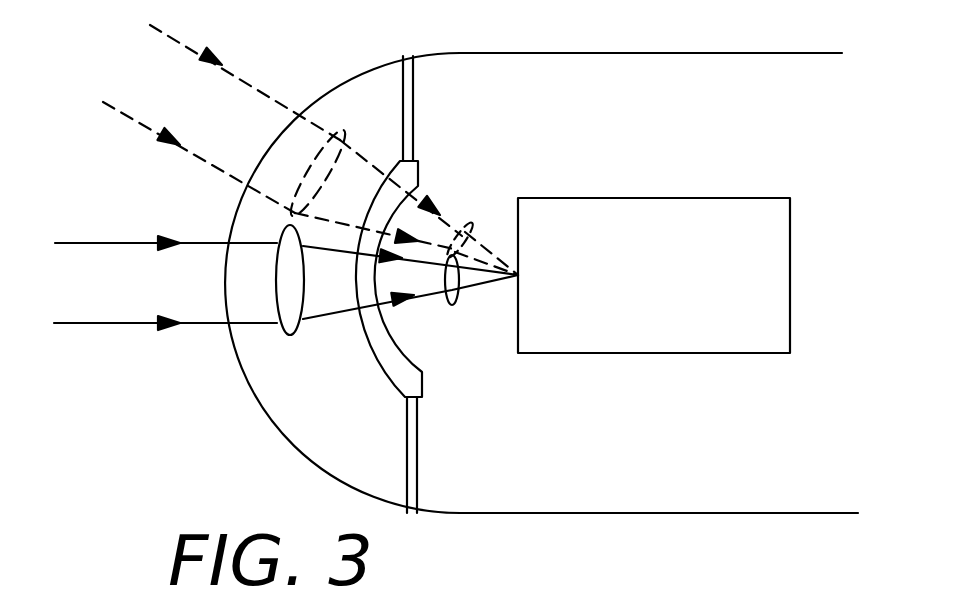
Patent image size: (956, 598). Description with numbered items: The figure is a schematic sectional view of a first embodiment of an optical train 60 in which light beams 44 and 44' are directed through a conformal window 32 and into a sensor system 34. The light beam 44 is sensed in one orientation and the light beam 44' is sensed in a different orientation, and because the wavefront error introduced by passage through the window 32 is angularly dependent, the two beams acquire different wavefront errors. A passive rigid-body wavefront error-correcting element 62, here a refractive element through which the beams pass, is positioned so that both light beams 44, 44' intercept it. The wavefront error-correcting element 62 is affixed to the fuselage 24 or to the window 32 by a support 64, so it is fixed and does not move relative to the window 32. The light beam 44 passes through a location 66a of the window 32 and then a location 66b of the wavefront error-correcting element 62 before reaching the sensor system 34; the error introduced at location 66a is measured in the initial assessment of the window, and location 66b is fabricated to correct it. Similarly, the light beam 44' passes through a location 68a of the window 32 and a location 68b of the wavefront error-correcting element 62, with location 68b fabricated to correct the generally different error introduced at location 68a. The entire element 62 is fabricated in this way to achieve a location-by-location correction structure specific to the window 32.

The fuselage 24 is at (608, 516).
The window 32 is at (288, 447).
The sensor system 34 is at (718, 353).
The light beam 44 is at (286, 313).
The light beam 44' is at (285, 150).
The optical train 60 is at (757, 445).
The passive rigid-body wavefront error-correcting element 62 is at (375, 372).
The support 64 is at (414, 103).
The location of the window 66a is at (227, 282).
The location of the wavefront error-correcting element 66b is at (349, 281).
The location of the window 68a is at (263, 152).
The location of the wavefront error-correcting element 68b is at (368, 200).